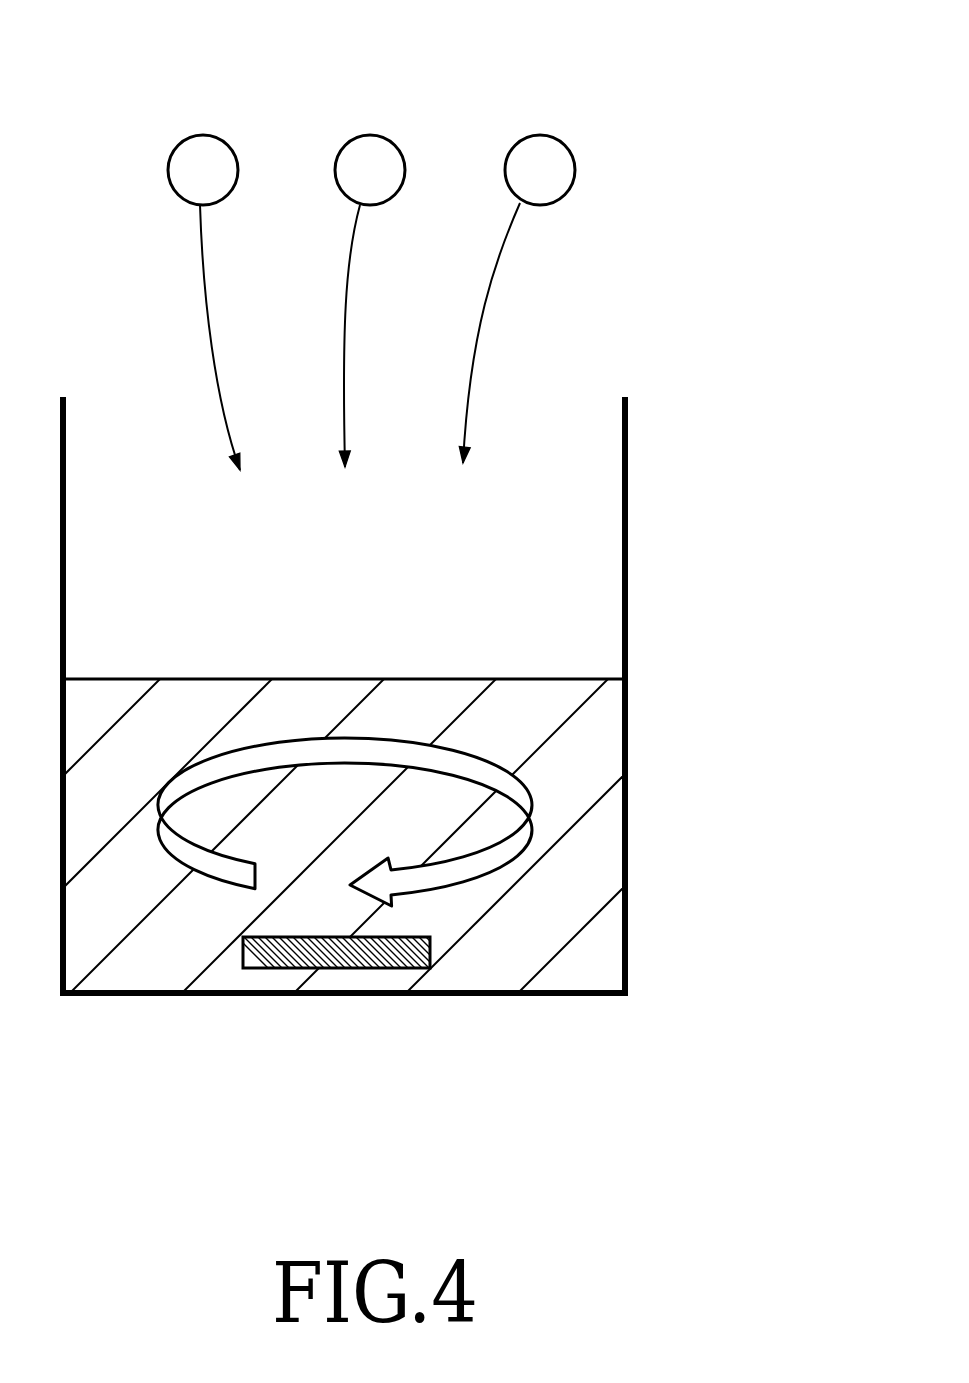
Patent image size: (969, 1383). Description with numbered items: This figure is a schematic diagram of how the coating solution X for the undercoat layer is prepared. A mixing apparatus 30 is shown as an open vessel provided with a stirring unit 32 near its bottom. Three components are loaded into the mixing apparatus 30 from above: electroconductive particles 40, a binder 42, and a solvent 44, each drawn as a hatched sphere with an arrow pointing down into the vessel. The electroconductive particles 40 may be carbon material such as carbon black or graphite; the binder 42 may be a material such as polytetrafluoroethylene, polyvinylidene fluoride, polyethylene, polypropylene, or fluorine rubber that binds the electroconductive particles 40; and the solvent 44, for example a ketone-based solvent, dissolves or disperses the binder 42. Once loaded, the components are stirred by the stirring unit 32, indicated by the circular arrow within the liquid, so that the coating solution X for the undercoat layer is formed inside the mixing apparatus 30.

The mixing apparatus 30 is at (627, 507).
The coating solution for the undercoat layer X is at (603, 837).
The stirring unit 32 is at (346, 958).
The electroconductive particles 40 is at (203, 135).
The binder 42 is at (370, 135).
The solvent 44 is at (540, 135).